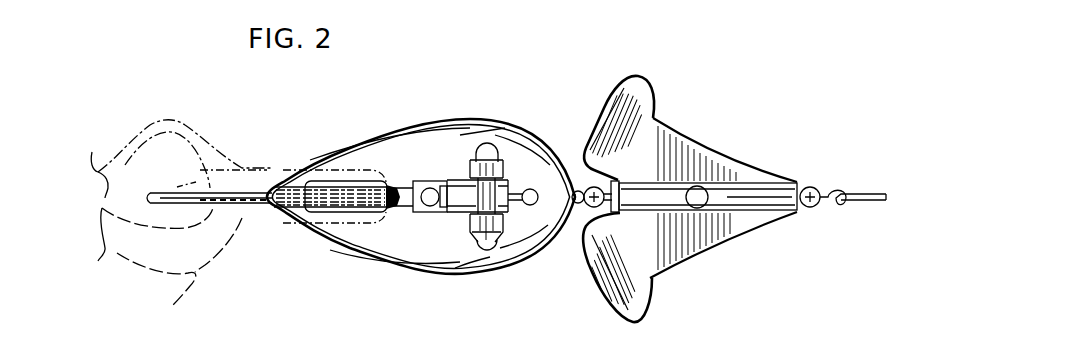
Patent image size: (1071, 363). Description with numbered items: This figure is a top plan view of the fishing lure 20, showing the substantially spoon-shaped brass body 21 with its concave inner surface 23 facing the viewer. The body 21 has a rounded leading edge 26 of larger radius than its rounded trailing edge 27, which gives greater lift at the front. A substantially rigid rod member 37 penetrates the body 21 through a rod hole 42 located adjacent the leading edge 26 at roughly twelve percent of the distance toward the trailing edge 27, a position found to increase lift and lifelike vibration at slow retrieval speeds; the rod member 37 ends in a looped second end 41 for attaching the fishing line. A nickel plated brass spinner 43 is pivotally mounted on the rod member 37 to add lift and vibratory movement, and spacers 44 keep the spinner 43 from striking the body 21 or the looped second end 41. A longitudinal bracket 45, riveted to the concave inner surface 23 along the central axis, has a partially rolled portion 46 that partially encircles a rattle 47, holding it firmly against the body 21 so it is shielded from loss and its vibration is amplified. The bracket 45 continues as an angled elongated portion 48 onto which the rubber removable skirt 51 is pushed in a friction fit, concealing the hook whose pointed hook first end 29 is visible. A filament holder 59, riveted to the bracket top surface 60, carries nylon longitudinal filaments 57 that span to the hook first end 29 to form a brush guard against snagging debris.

The fishing lure 20 is at (105, 102).
The spoon-shaped body 21 is at (460, 114).
The concave inner surface 23 is at (357, 162).
The rounded leading edge 26 is at (579, 203).
The rounded trailing edge 27 is at (262, 211).
The pointed hook first end 29 is at (202, 176).
The rod member 37 is at (648, 205).
The looped second end 41 is at (858, 194).
The rod hole 42 is at (530, 189).
The spinner 43 is at (714, 266).
The spacers 44 is at (586, 187).
The longitudinal bracket 45 is at (440, 222).
The partially rolled portion 46 is at (509, 216).
The rattle 47 is at (487, 254).
The elongated portion 48 is at (318, 173).
The removable skirt 51 is at (181, 226).
The longitudinal filaments 57 is at (296, 215).
The filament holder 59 is at (396, 179).
The bracket top surface 60 is at (456, 196).